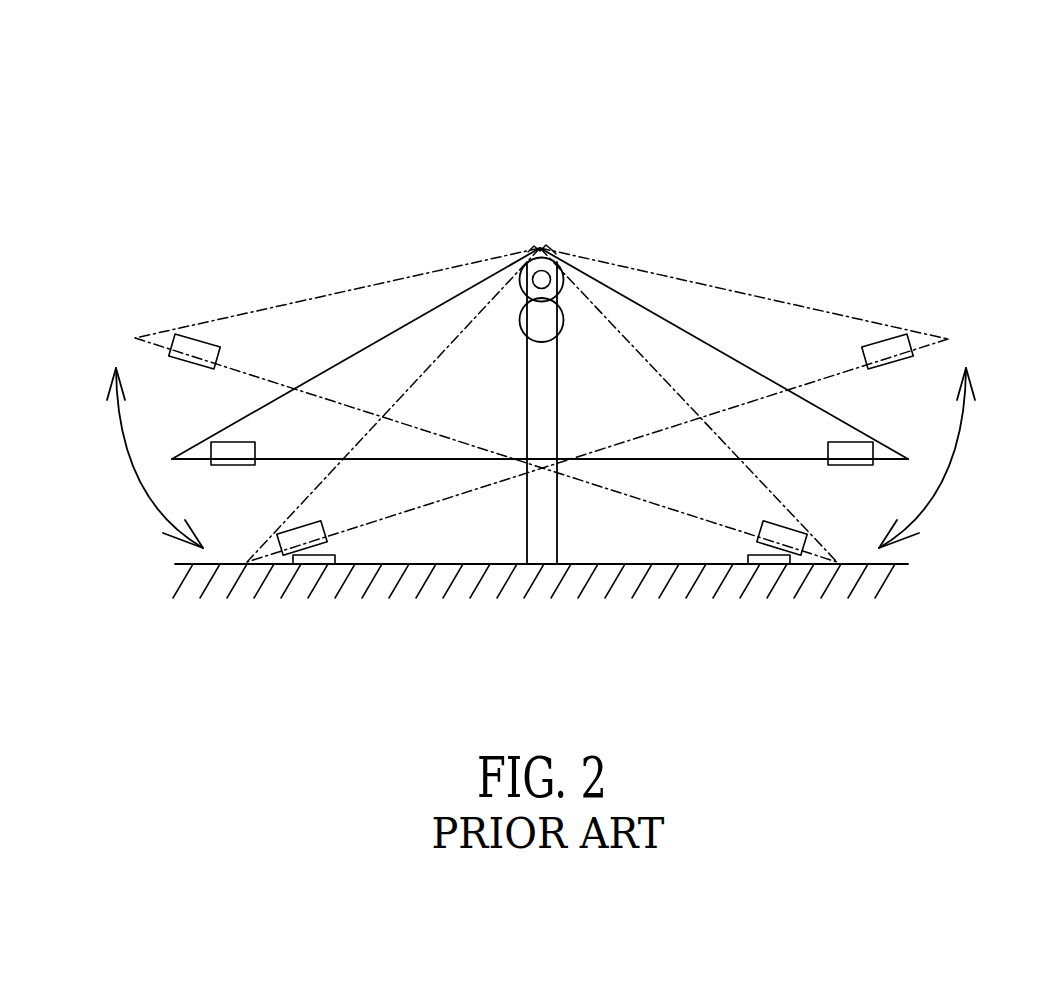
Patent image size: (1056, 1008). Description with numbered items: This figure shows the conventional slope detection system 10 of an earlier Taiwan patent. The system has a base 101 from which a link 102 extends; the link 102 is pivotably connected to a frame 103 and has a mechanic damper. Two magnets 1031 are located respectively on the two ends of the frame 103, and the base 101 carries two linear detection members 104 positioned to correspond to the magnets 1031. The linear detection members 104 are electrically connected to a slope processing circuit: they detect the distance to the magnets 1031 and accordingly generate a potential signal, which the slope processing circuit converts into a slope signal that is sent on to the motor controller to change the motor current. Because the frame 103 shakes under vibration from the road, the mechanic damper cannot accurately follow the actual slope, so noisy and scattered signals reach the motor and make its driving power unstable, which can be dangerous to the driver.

The slope detection system 10 is at (565, 227).
The base 101 is at (868, 585).
The link 102 is at (541, 392).
The frame 103 is at (357, 350).
The magnets 1031 is at (223, 453).
The linear detection members 104 is at (308, 562).